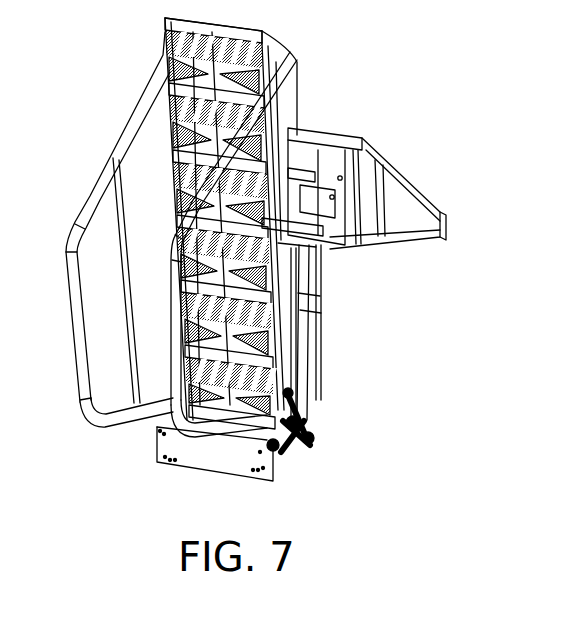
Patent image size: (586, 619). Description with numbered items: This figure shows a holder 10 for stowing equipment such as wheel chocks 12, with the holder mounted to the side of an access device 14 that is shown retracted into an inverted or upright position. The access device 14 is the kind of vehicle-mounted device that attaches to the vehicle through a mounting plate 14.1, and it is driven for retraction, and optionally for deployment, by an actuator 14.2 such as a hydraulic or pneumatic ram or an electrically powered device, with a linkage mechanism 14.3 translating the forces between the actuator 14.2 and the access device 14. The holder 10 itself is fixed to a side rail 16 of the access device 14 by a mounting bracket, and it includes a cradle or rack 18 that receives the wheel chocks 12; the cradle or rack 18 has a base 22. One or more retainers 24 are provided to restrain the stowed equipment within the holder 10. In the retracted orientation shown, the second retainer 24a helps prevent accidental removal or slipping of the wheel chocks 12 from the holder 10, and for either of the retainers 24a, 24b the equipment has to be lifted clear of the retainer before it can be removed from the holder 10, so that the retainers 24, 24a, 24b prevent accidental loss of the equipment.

The holder 10 is at (390, 177).
The wheel chock 12 is at (388, 225).
The access device 14 is at (310, 295).
The mounting plate 14.1 is at (193, 457).
The actuator 14.2 is at (310, 388).
The linkage mechanism 14.3 is at (313, 452).
The side rail 16 is at (293, 90).
The cradle or rack 18 is at (420, 197).
The base 22 is at (427, 245).
The retainer 24 is at (190, 224).
The second retainer 24a is at (305, 282).
The retainer 24b is at (317, 130).